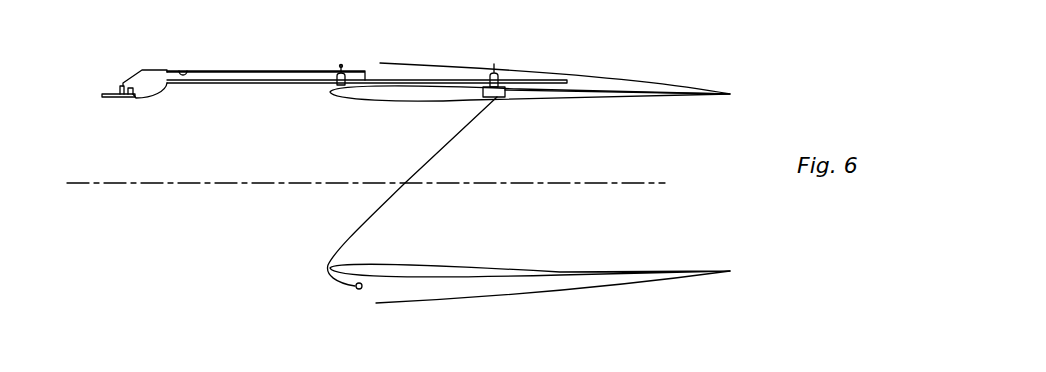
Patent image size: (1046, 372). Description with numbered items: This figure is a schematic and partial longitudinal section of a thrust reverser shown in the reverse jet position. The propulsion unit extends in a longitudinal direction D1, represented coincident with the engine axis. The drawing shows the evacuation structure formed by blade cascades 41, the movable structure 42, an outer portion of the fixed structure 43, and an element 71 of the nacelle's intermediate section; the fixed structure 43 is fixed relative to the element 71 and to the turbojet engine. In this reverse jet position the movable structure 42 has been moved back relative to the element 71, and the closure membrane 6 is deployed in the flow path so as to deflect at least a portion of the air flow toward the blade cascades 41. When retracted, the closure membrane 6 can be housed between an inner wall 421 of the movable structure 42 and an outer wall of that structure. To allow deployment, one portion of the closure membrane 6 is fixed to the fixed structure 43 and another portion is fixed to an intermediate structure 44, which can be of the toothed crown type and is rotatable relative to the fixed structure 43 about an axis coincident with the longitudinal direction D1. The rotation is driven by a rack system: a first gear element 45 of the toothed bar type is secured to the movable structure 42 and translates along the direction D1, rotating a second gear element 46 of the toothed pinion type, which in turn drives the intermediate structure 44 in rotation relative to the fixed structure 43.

The blade cascades 41 is at (201, 70).
The movable structure 42 is at (557, 69).
The inner wall of the movable structure 421 is at (357, 98).
The fixed structure 43 is at (366, 72).
The intermediate structure 44 is at (497, 99).
The first gear element 45 is at (444, 82).
The second gear element 46 is at (494, 71).
The closure membrane 6 is at (385, 203).
The element of the intermediate section 71 is at (118, 100).
The longitudinal direction D1 is at (83, 184).